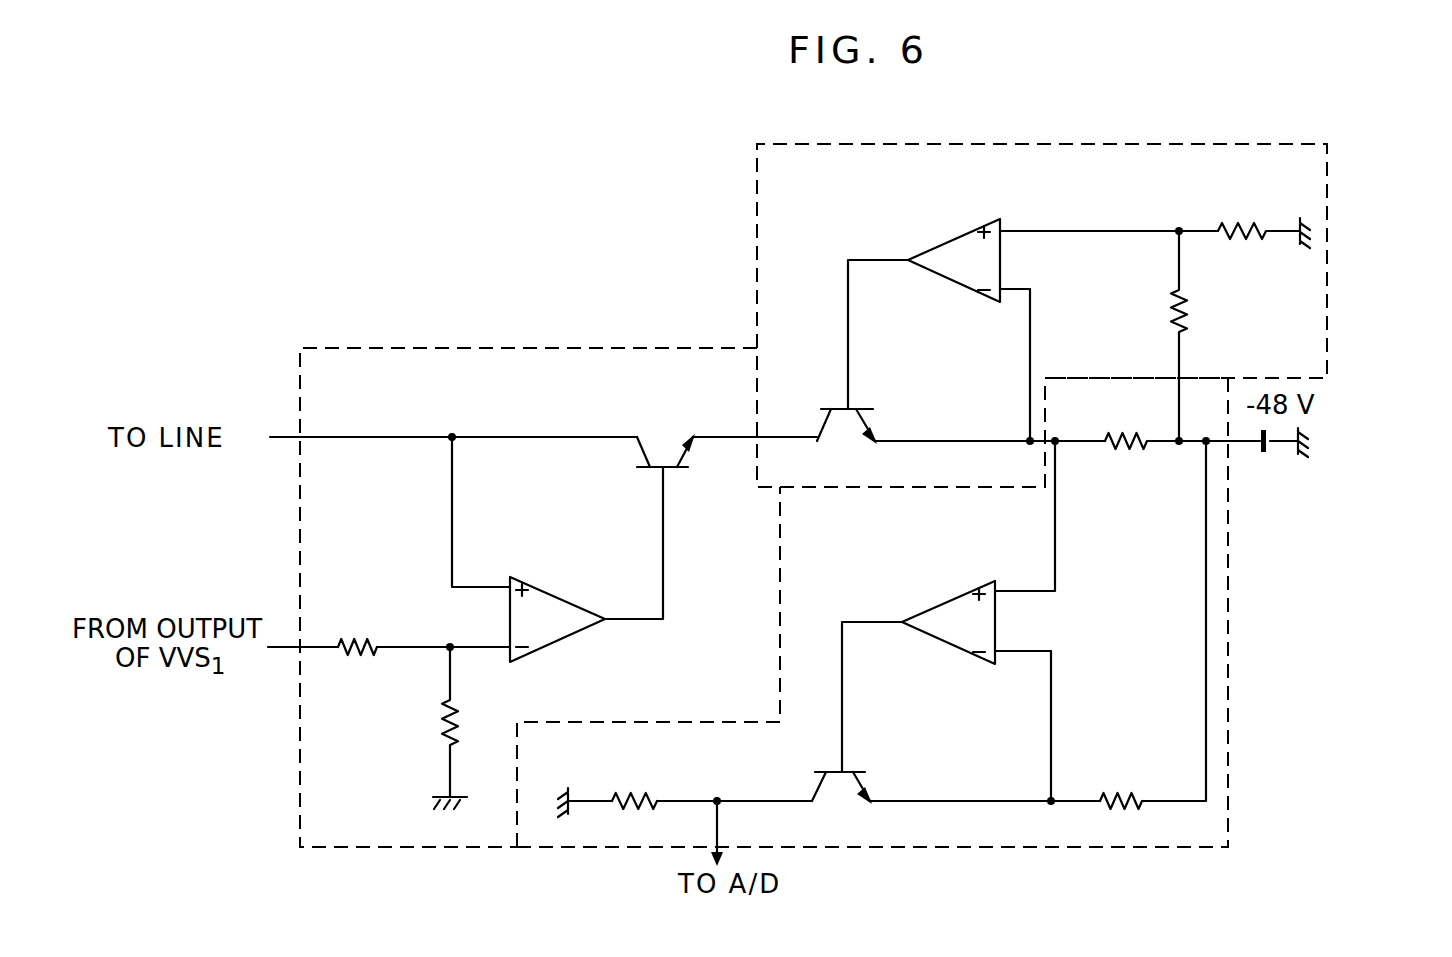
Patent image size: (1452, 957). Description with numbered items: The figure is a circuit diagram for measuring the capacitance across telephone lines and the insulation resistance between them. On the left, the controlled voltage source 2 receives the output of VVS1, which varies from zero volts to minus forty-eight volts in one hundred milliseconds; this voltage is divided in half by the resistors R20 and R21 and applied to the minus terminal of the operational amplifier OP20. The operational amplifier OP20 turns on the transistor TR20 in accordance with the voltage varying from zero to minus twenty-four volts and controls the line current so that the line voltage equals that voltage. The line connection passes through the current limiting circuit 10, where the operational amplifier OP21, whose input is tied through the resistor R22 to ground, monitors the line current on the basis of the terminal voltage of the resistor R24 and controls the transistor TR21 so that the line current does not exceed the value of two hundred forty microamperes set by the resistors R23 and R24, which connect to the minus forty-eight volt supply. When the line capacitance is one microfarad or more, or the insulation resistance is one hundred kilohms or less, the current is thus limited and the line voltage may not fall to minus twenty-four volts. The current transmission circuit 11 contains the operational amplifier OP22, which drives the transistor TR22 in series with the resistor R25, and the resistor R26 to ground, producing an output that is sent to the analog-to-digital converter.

The controlled voltage source VVS2 2 is at (381, 348).
The current limiting circuit CRC1 10 is at (1327, 284).
The current transmission circuit CTC1 11 is at (1268, 680).
The operational amplifier OP20 is at (586, 564).
The operational amplifier OP21 is at (1013, 294).
The operational amplifier OP22 is at (946, 655).
The transistor TR20 is at (658, 426).
The transistor TR21 is at (850, 445).
The transistor TR22 is at (846, 809).
The resistor R20 is at (362, 625).
The resistor R21 is at (415, 728).
The resistor R22 is at (1244, 215).
The resistor R23 is at (1147, 336).
The resistor R24 is at (1127, 419).
The resistor R25 is at (1124, 782).
The resistor R26 is at (609, 782).